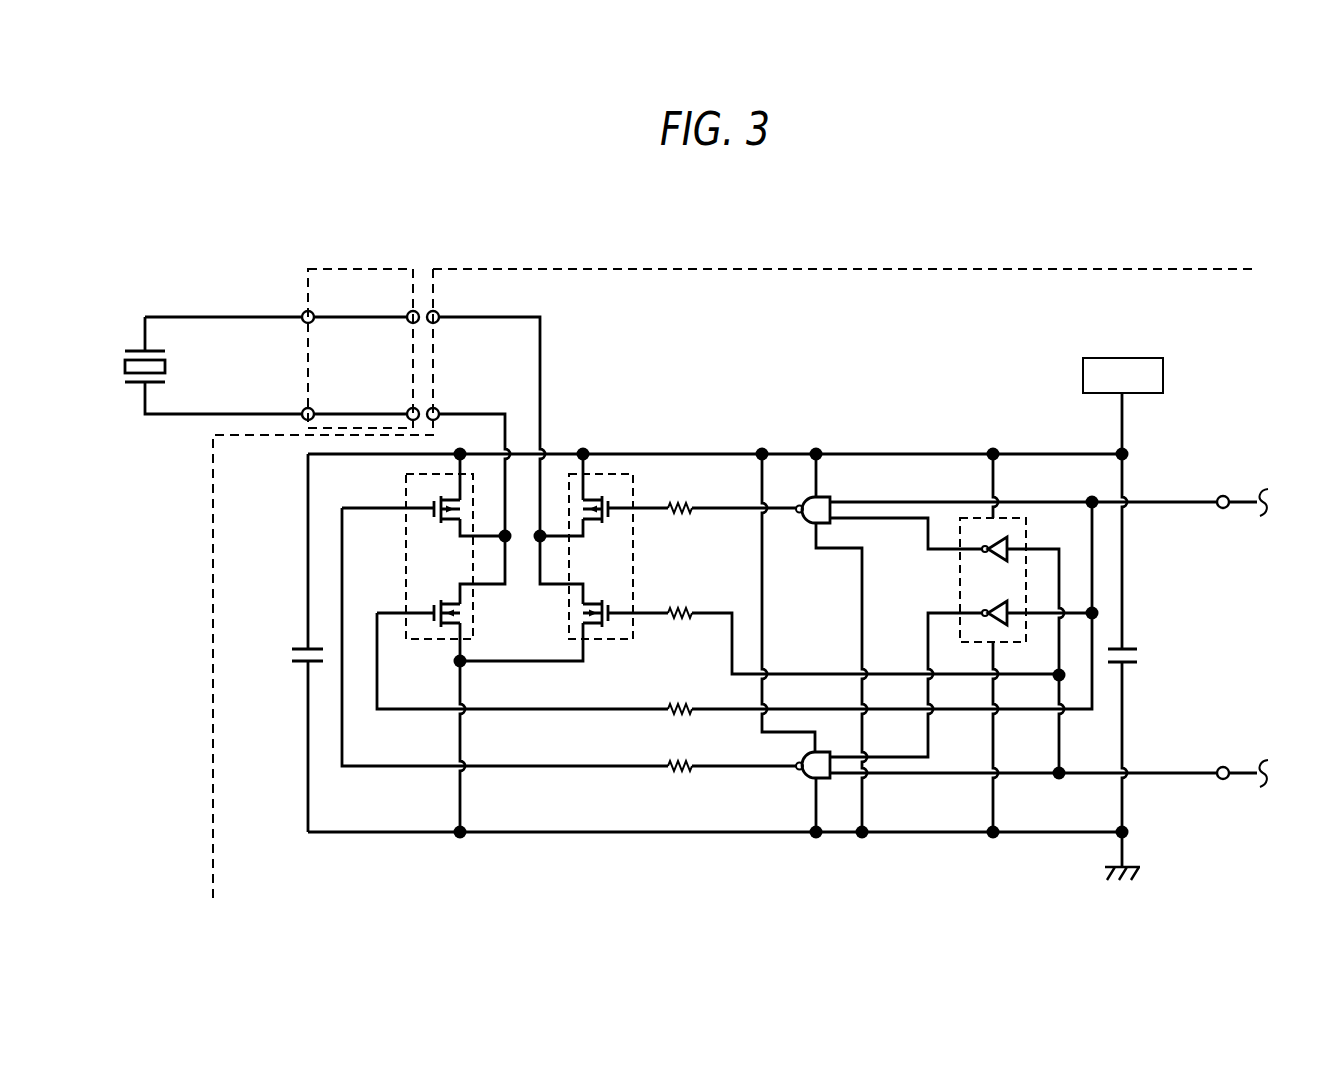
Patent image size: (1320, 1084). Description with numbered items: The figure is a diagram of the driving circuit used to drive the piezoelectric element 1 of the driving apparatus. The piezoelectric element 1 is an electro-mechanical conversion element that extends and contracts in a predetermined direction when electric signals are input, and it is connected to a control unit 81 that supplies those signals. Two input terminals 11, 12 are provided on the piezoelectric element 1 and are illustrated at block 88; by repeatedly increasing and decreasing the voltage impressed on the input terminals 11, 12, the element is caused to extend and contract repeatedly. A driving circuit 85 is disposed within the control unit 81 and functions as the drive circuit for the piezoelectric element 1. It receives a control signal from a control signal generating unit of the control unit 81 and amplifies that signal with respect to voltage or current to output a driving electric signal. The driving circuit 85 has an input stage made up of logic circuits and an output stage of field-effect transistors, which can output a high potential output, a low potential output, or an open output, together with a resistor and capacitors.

The piezoelectric element 1 is at (126, 363).
The input terminal 11 is at (303, 313).
The input terminal 12 is at (303, 410).
The block 88 is at (358, 268).
The control unit 81 is at (1094, 268).
The driving circuit 85 is at (985, 368).